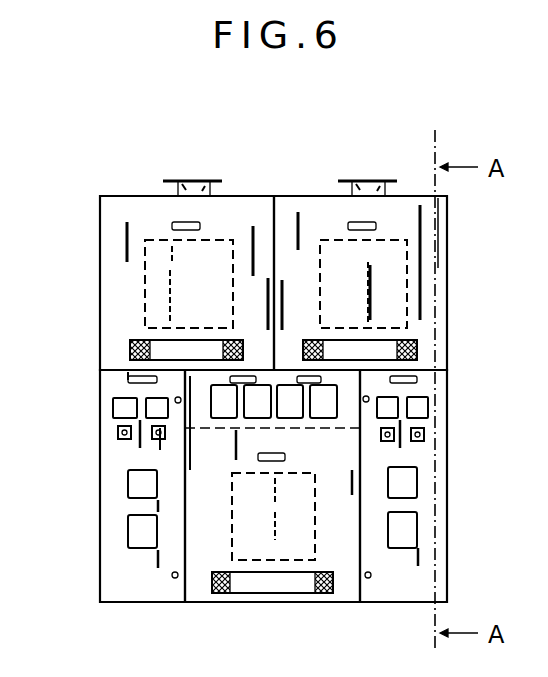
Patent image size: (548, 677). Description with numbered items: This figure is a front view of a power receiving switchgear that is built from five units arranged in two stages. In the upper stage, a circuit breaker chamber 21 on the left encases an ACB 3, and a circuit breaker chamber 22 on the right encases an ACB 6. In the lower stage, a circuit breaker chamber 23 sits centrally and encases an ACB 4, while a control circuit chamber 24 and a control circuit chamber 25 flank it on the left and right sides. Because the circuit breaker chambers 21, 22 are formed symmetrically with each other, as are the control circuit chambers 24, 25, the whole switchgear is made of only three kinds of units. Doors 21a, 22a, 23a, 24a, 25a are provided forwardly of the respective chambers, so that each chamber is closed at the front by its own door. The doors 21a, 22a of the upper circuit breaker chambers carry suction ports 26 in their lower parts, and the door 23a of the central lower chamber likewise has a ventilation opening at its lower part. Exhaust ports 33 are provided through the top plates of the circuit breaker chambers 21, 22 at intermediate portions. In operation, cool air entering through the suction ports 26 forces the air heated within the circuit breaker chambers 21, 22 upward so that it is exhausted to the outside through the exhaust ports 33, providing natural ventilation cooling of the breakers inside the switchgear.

The circuit breaker chamber 21 is at (122, 196).
The circuit breaker chamber 22 is at (405, 196).
The door 21a is at (105, 276).
The door 22a is at (427, 290).
The exhaust port 33 is at (188, 180).
The ACB 3 is at (212, 240).
The ACB 6 is at (345, 240).
The suction port 26 is at (130, 351).
The control circuit chamber 24 is at (145, 592).
The circuit breaker chamber 23 is at (278, 597).
The control circuit chamber 25 is at (400, 578).
The door 24a is at (108, 572).
The door 25a is at (432, 538).
The door 23a is at (345, 590).
The ACB 4 is at (232, 525).